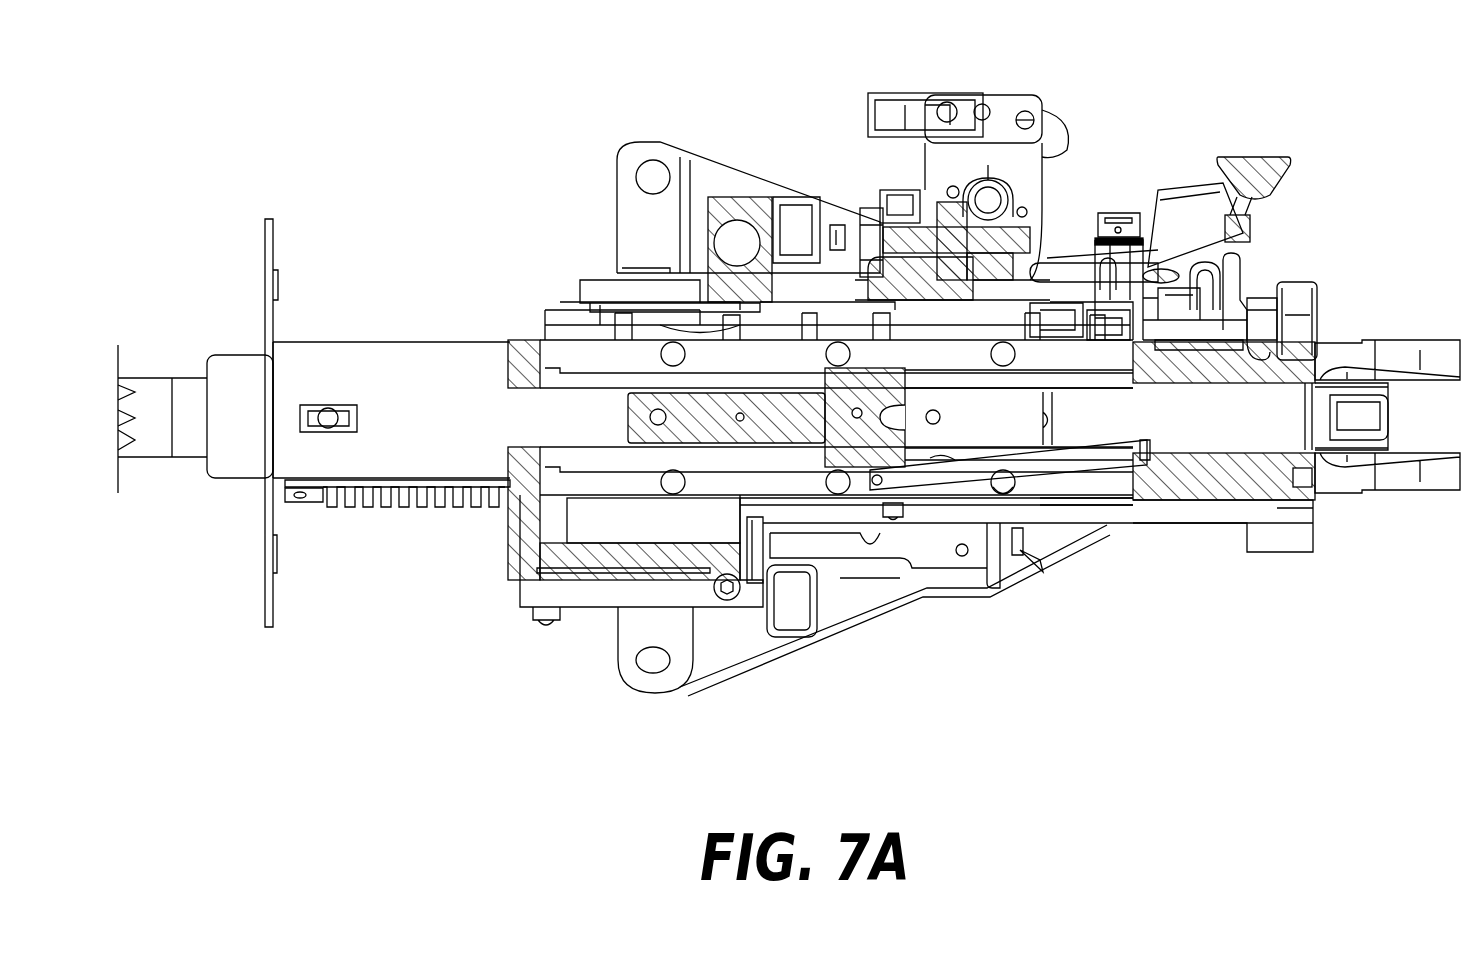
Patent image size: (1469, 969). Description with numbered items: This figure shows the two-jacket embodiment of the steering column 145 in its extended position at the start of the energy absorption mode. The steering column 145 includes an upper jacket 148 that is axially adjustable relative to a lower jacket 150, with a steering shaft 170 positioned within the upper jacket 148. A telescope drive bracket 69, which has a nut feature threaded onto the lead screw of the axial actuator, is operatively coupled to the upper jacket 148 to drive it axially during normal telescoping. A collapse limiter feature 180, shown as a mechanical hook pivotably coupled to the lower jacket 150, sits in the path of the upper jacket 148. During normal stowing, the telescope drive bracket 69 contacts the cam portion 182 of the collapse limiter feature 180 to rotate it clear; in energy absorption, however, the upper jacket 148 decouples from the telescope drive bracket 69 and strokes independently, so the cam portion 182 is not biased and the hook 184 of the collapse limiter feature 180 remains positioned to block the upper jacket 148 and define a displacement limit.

The steering column 145 is at (494, 138).
The steering shaft 170 is at (157, 400).
The upper jacket 148 is at (388, 380).
The telescope drive bracket 69 is at (802, 415).
The collapse limiter feature 180 is at (1022, 478).
The cam portion 182 is at (940, 460).
The lower jacket 150 is at (1087, 485).
The hook 184 is at (1143, 437).